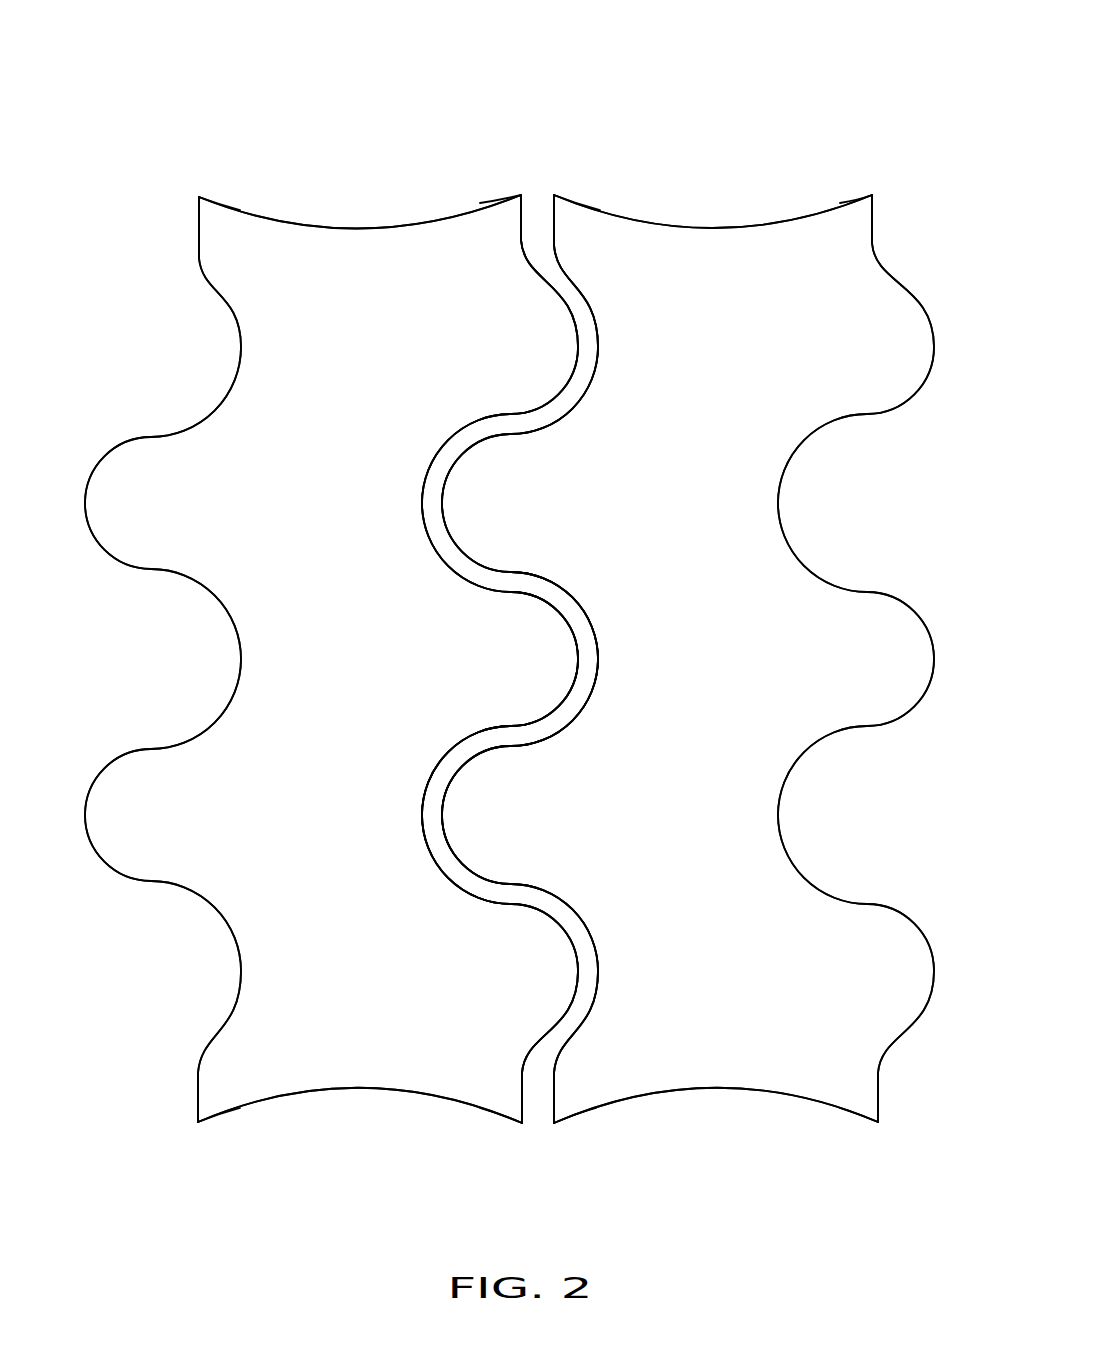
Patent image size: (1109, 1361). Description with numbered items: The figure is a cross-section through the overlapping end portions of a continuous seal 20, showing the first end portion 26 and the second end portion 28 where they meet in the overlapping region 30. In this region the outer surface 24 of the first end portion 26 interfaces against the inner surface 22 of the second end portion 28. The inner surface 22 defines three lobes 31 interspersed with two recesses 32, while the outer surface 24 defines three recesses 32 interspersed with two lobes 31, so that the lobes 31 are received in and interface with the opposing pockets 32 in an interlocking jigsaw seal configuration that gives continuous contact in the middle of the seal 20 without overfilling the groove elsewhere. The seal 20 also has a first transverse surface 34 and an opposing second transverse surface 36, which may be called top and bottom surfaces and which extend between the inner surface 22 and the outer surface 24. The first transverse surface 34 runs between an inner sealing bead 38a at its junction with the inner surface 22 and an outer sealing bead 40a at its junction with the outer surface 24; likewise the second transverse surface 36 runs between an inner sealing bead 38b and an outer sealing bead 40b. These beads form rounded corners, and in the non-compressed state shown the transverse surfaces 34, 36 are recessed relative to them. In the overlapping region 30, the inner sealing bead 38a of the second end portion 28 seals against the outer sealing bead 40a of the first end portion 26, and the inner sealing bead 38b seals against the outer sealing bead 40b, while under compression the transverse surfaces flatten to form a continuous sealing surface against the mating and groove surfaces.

The seal 20 is at (97, 1055).
The inner surface 22 is at (523, 240).
The outer surface 24 is at (199, 262).
The first end portion 26 is at (703, 1013).
The second end portion 28 is at (347, 1013).
The overlapping region 30 is at (537, 131).
The lobes 31 is at (574, 637).
The recesses 32 is at (597, 650).
The first transverse surface 34 is at (323, 227).
The second transverse surface 36 is at (327, 1090).
The inner sealing bead 38a is at (519, 197).
The inner sealing bead 38b is at (519, 1125).
The outer sealing bead 40a is at (200, 197).
The outer sealing bead 40b is at (212, 1125).